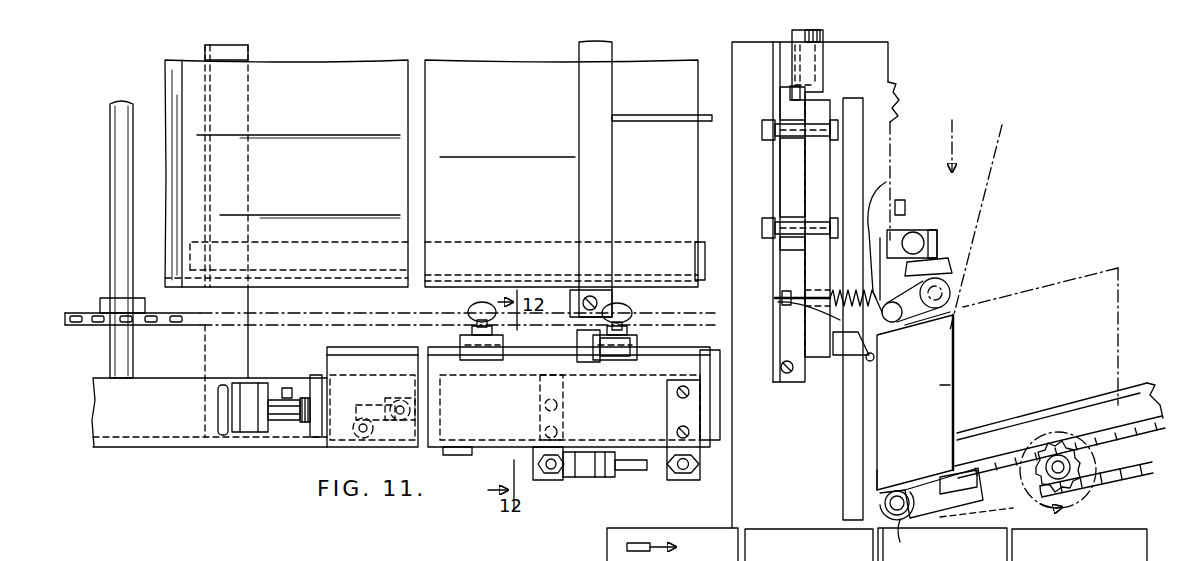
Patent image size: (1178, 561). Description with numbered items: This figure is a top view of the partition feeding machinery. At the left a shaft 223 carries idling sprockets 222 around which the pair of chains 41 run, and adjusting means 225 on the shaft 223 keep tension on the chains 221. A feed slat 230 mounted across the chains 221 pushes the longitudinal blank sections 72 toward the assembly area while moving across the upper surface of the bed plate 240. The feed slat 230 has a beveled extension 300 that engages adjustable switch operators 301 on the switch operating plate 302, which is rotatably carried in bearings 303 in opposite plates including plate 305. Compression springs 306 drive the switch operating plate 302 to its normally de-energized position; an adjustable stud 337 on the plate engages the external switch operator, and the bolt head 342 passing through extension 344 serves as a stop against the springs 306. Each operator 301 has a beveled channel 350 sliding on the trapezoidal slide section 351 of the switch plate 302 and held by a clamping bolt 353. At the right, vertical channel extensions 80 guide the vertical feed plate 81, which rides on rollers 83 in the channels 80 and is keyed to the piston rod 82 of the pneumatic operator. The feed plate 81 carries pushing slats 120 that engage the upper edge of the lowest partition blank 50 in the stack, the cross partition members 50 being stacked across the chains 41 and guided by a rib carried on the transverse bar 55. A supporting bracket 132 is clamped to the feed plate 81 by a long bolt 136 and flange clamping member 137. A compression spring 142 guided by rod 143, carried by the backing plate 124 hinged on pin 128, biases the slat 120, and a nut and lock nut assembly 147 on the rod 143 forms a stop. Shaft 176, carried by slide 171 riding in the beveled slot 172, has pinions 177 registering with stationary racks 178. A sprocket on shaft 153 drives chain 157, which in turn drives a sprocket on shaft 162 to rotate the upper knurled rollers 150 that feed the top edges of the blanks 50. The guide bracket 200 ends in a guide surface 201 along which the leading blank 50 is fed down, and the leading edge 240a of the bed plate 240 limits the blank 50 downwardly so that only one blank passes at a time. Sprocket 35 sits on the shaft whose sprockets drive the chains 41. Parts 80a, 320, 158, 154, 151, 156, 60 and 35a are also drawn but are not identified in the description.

The shaft 223 is at (110, 224).
The longitudinal blank sections 72 is at (647, 122).
The feed slat 230 is at (590, 187).
The idling sprockets 222 is at (66, 318).
The chains 221 is at (82, 327).
The plate 305 is at (314, 378).
The adjusting means 225 is at (290, 420).
The compression springs 306 is at (345, 440).
The bearings 303 is at (330, 395).
The beveled channel 350 is at (385, 338).
The adjustable switch operators 301 is at (460, 340).
The slide section 351 is at (615, 347).
The clamping bolt 353 is at (470, 310).
The beveled extension 300 is at (577, 338).
The switch operating plate 302 is at (498, 430).
The extension 344 is at (667, 407).
The bolt head 342 is at (680, 476).
The adjustable stud 337 is at (551, 474).
The cylinder 320 is at (585, 478).
The plate 80a is at (885, 60).
The stationary racks 178 is at (897, 103).
The vertical channel extensions 80 is at (790, 336).
The piston rod 82 is at (820, 36).
The rollers 83 is at (790, 80).
The vertical feed plate 81 is at (790, 175).
The long bolt 136 is at (762, 128).
The flange clamping member 137 is at (770, 138).
The supporting bracket 132 is at (822, 108).
The guide bracket 200 is at (858, 143).
The rod 143 is at (775, 298).
The nut and lock nut assembly 147 is at (778, 298).
The compression spring 142 is at (790, 310).
The backing plate 124 is at (860, 320).
The hinge pin 128 is at (868, 360).
The pushing slats 120 is at (887, 186).
The pinions 177 is at (906, 222).
The shaft 176 is at (935, 232).
The slide member 171 is at (950, 300).
The beveled slot 172 is at (938, 255).
The wedge 158 is at (955, 270).
The shaft 162 is at (952, 290).
The upper knurled rollers 150 is at (905, 316).
The link 154 is at (955, 335).
The axis line 151 is at (990, 160).
The shaft 153 is at (885, 500).
The roller 156 is at (915, 536).
The partition blanks 50 is at (872, 403).
The chain 157 is at (950, 385).
The guide surface 201 is at (870, 475).
The leading edge 240a is at (880, 493).
The sprocket 35 is at (1058, 432).
The transverse bar 55 is at (1000, 448).
The guide 60 is at (958, 476).
The bed plate 240 is at (1148, 432).
The sprocket 35a is at (1080, 463).
The chains 41 is at (1138, 475).